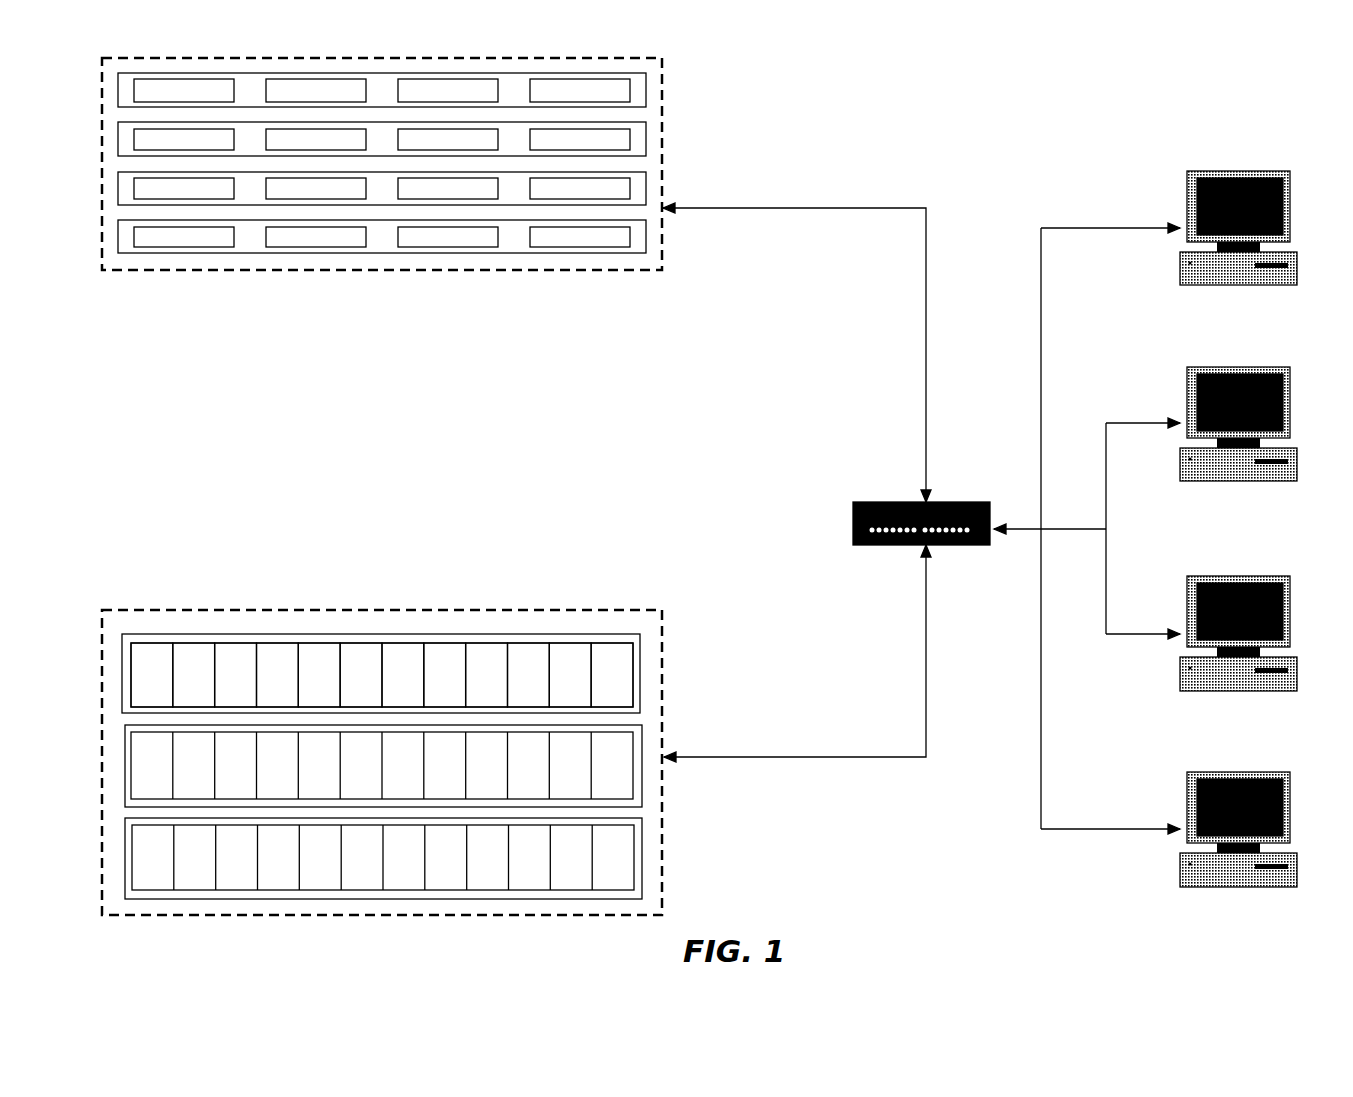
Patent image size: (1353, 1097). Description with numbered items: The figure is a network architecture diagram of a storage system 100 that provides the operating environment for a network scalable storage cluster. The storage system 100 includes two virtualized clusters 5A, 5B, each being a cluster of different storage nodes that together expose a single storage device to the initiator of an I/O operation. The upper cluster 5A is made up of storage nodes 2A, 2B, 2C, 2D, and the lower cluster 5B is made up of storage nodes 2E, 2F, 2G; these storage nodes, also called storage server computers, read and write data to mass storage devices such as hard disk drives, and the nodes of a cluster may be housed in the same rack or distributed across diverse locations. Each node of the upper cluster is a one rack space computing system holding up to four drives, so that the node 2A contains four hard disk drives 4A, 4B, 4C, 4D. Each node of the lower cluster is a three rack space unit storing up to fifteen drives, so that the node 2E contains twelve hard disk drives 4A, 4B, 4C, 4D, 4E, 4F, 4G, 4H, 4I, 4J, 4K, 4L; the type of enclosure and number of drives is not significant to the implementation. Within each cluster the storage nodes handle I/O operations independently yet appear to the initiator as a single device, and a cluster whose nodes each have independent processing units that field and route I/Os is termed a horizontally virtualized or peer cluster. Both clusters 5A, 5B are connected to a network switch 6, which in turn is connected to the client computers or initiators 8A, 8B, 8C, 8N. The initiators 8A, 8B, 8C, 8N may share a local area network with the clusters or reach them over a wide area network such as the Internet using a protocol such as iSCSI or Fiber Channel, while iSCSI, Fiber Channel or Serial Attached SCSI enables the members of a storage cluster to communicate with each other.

The storage system 100 is at (1021, 100).
The virtualized cluster 5A is at (659, 89).
The virtualized cluster 5B is at (653, 634).
The storage node 2A is at (637, 102).
The storage node 2B is at (640, 152).
The storage node 2C is at (640, 200).
The storage node 2D is at (640, 247).
The storage node 2E is at (640, 660).
The storage node 2F is at (640, 735).
The storage node 2G is at (637, 825).
The hard disk drive 4A is at (172, 100).
The hard disk drive 4B is at (304, 100).
The hard disk drive 4C is at (436, 100).
The hard disk drive 4D is at (568, 100).
The hard disk drive 4E is at (308, 684).
The hard disk drive 4F is at (350, 684).
The hard disk drive 4G is at (415, 684).
The hard disk drive 4H is at (457, 684).
The hard disk drive 4I is at (496, 684).
The hard disk drive 4J is at (539, 684).
The hard disk drive 4K is at (582, 684).
The hard disk drive 4L is at (602, 684).
The network switch 6 is at (965, 547).
The initiator 8A is at (1277, 280).
The initiator 8B is at (1285, 480).
The initiator 8C is at (1287, 688).
The initiator 8N is at (1287, 882).